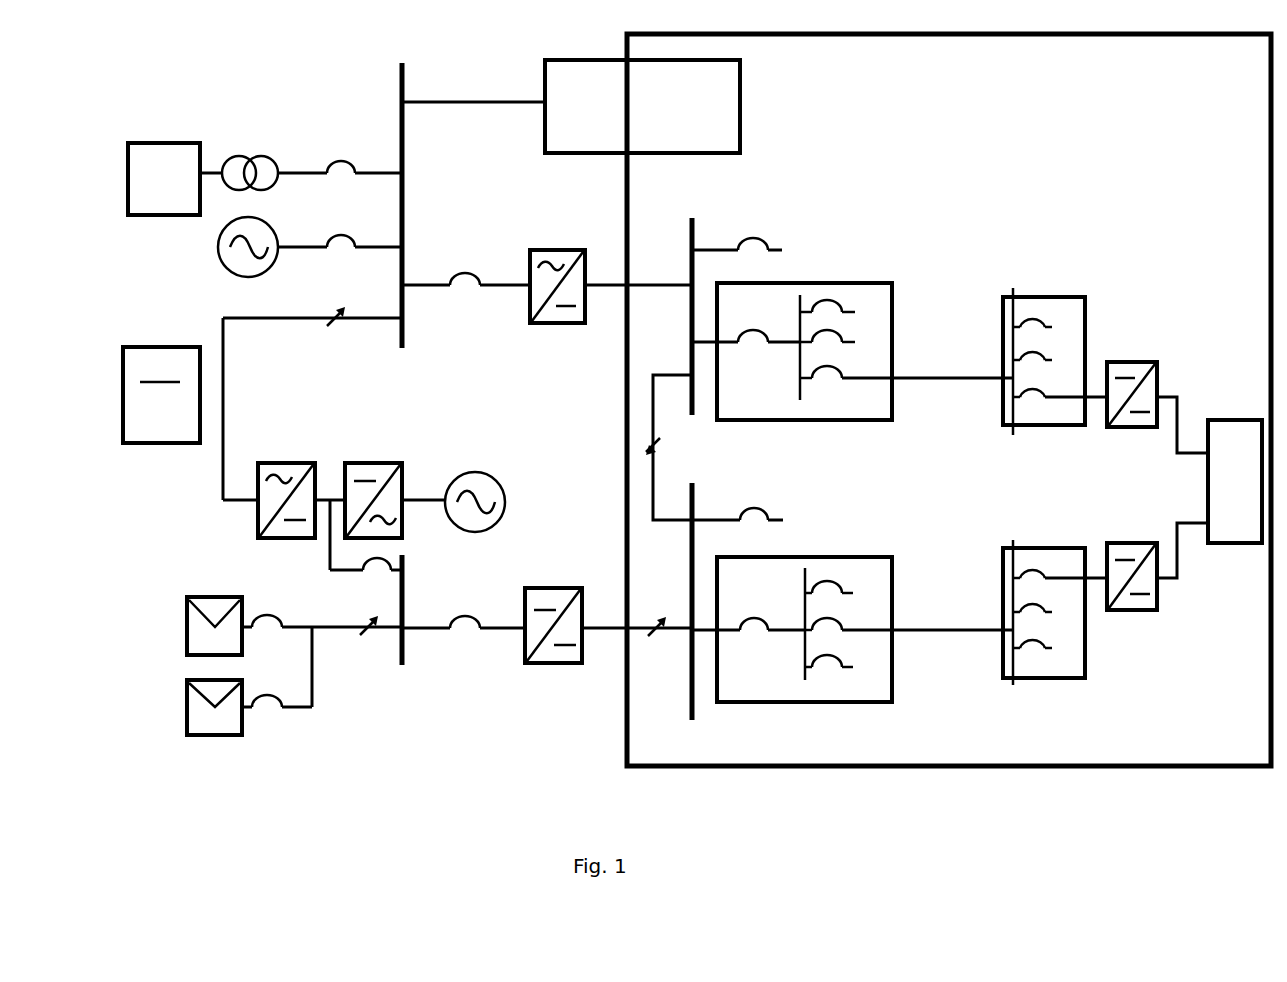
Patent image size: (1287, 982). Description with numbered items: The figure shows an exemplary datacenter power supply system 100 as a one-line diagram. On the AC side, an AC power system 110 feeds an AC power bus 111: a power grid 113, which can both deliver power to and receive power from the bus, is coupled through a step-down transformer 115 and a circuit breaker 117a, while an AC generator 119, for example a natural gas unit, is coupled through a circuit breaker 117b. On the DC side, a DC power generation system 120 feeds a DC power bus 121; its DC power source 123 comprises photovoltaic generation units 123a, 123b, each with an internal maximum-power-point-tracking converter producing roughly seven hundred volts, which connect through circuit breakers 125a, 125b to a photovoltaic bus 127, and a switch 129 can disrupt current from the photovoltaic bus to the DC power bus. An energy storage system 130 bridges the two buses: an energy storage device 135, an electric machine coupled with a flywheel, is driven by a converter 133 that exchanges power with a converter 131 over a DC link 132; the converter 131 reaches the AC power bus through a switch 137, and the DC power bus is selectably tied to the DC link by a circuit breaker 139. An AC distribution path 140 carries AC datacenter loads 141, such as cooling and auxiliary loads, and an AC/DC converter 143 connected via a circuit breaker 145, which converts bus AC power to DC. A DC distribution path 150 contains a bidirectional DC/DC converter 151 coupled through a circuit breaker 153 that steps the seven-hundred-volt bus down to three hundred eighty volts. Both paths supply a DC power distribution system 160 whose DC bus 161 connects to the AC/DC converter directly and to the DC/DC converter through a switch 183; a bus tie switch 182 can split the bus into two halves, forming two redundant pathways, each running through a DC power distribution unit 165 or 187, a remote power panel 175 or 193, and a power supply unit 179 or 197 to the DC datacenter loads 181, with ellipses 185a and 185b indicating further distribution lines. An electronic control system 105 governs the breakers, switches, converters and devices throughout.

The datacenter power supply system 100 is at (449, 803).
The electronic control system 105 is at (161, 395).
The AC power system 110 is at (267, 106).
The AC power bus 111 is at (400, 68).
The power grid 113 is at (168, 140).
The transformer 115 is at (235, 156).
The circuit breaker 117a is at (338, 163).
The circuit breaker 117b is at (340, 238).
The AC generator 119 is at (218, 256).
The DC power generation system 120 is at (282, 786).
The DC power bus 121 is at (404, 660).
The DC power source 123 is at (196, 744).
The photovoltaic generation unit 123a is at (185, 600).
The photovoltaic generation unit 123b is at (185, 690).
The circuit breaker 125a is at (266, 620).
The circuit breaker 125b is at (268, 714).
The photovoltaic bus 127 is at (318, 706).
The switch 129 is at (366, 640).
The energy storage system 130 is at (236, 534).
The converter 131 is at (292, 462).
The DC link 132 is at (331, 498).
The converter 133 is at (386, 462).
The energy storage device 135 is at (470, 472).
The switch 137 is at (334, 314).
The circuit breaker 139 is at (374, 578).
The AC distribution path 140 is at (501, 306).
The AC datacenter loads 141 is at (545, 78).
The AC/DC converter 143 is at (560, 250).
The circuit breaker 145 is at (465, 280).
The DC distribution path 150 is at (518, 687).
The DC/DC converter 151 is at (546, 588).
The circuit breaker 153 is at (462, 620).
The DC power distribution system 160 is at (808, 772).
The DC bus 161 is at (695, 222).
The DC power distribution unit 165 is at (892, 284).
The remote power panel 175 is at (1050, 297).
The power supply unit 179 is at (1132, 362).
The DC datacenter loads 181 is at (1248, 420).
The bus tie switch 182 is at (665, 448).
The switch 183 is at (658, 620).
The ellipsis 185a is at (826, 245).
The ellipsis 185b is at (832, 515).
The DC power distribution unit 187 is at (892, 557).
The remote power panel 193 is at (1045, 548).
The power supply unit 197 is at (1135, 543).